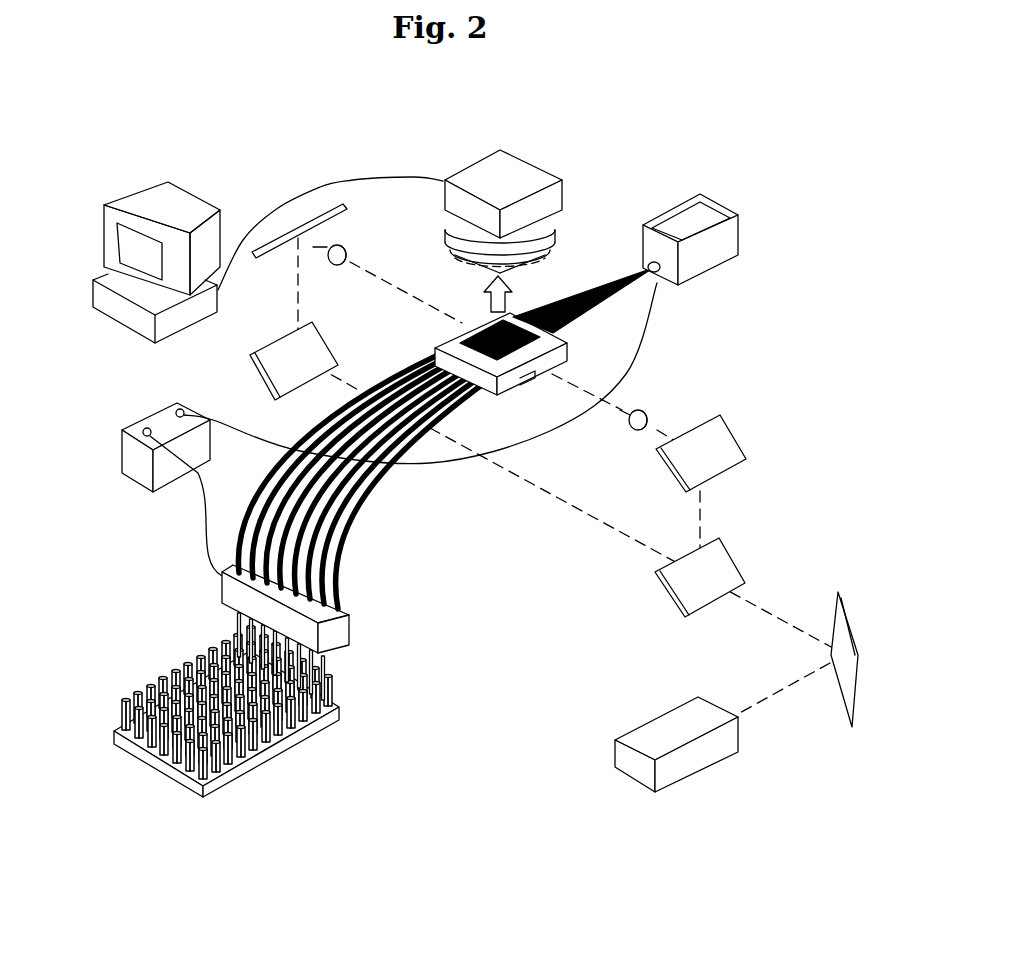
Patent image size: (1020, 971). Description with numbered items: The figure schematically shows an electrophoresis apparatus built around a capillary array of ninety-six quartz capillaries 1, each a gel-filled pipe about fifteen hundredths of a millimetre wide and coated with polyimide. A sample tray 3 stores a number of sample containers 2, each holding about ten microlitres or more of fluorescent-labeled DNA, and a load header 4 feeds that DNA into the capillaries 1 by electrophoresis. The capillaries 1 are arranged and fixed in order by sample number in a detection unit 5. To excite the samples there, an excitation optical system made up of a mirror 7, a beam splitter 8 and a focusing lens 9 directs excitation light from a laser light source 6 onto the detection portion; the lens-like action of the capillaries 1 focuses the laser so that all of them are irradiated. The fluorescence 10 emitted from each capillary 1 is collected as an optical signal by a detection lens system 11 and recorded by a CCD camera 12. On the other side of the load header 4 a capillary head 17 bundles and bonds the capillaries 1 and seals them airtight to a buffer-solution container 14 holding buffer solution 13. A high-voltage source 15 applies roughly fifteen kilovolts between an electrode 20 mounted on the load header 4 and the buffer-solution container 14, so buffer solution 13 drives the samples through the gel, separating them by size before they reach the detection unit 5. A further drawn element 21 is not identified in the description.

The capillary 1 is at (352, 518).
The sample container 2 is at (118, 707).
The sample tray 3 is at (113, 742).
The load header 4 is at (344, 613).
The detection unit 5 is at (511, 389).
The laser light source 6 is at (710, 767).
The mirror 7 is at (300, 229).
The beam splitter 8 is at (700, 610).
The focusing lens 9 is at (344, 268).
The fluorescence 10 is at (561, 341).
The detection lens system 11 is at (573, 231).
The CCD camera 12 is at (545, 164).
The buffer solution 13 is at (736, 214).
The buffer-solution container 14 is at (680, 213).
The high-voltage source 15 is at (117, 450).
The capillary head 17 is at (652, 277).
The electrode 20 is at (225, 633).
The computer 21 is at (187, 188).